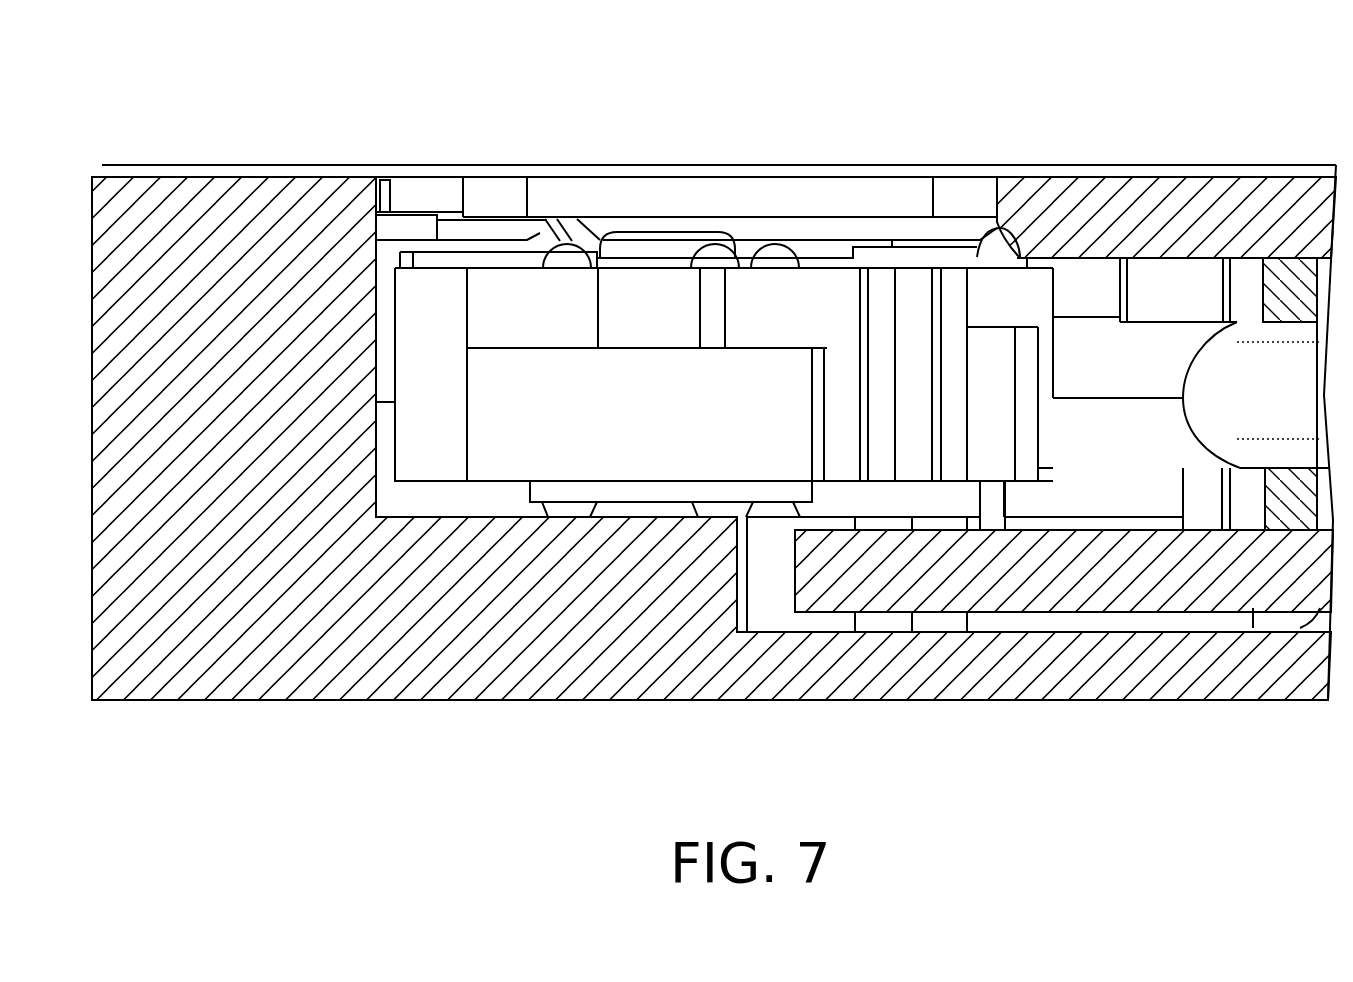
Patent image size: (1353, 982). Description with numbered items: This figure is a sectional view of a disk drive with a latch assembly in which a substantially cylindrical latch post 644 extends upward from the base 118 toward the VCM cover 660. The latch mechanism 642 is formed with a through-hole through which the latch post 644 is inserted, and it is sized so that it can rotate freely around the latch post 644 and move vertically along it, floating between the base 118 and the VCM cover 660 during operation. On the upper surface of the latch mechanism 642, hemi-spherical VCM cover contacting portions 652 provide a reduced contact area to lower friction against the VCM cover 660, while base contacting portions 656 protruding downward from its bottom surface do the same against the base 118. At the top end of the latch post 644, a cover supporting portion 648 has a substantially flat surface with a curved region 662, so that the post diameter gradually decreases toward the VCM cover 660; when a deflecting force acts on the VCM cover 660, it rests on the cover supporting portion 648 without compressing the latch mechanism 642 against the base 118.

The base 118 is at (450, 680).
The latch mechanism 642 is at (503, 427).
The latch post 644 is at (666, 216).
The cover supporting portion 648 is at (633, 233).
The VCM cover contacting portions 652 is at (567, 253).
The base contacting portions 656 is at (553, 510).
The VCM cover 660 is at (870, 187).
The curved region 662 is at (737, 233).